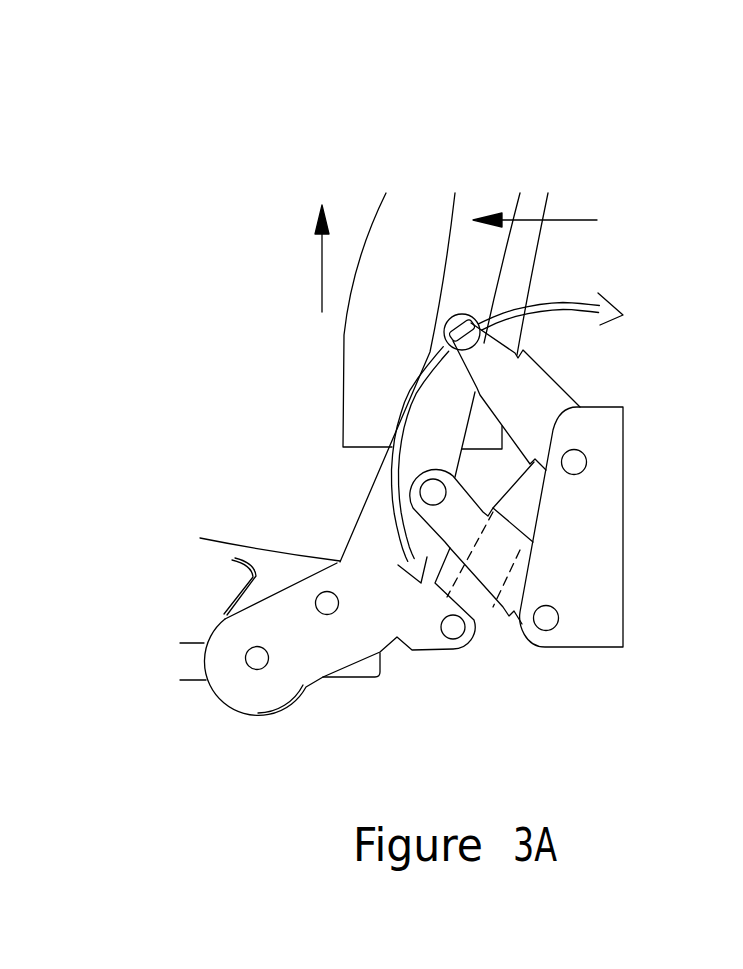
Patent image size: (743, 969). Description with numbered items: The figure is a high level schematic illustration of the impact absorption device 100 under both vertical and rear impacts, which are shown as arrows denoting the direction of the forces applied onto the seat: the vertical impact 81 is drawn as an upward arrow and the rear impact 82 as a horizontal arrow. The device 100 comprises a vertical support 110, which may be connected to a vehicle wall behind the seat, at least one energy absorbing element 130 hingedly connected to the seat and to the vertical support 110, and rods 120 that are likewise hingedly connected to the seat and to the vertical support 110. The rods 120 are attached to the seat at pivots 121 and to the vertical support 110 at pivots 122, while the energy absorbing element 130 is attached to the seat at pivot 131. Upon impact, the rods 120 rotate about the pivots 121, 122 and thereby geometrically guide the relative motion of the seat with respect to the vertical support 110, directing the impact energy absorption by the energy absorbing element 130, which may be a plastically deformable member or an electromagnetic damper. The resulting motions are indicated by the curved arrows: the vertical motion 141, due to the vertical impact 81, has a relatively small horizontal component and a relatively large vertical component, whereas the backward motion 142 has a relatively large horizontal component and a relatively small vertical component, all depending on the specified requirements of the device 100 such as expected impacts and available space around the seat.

The impact absorption device 100 is at (258, 133).
The vertical impact 81 is at (322, 259).
The rear impact 82 is at (560, 218).
The vertical support 110 is at (598, 535).
The rods 120 is at (538, 393).
The pivot 121 is at (432, 493).
The pivot 122 is at (574, 462).
The energy absorbing element 130 is at (528, 493).
The pivot 131 is at (452, 627).
The vertical motion 141 is at (393, 478).
The backward motion 142 is at (563, 300).